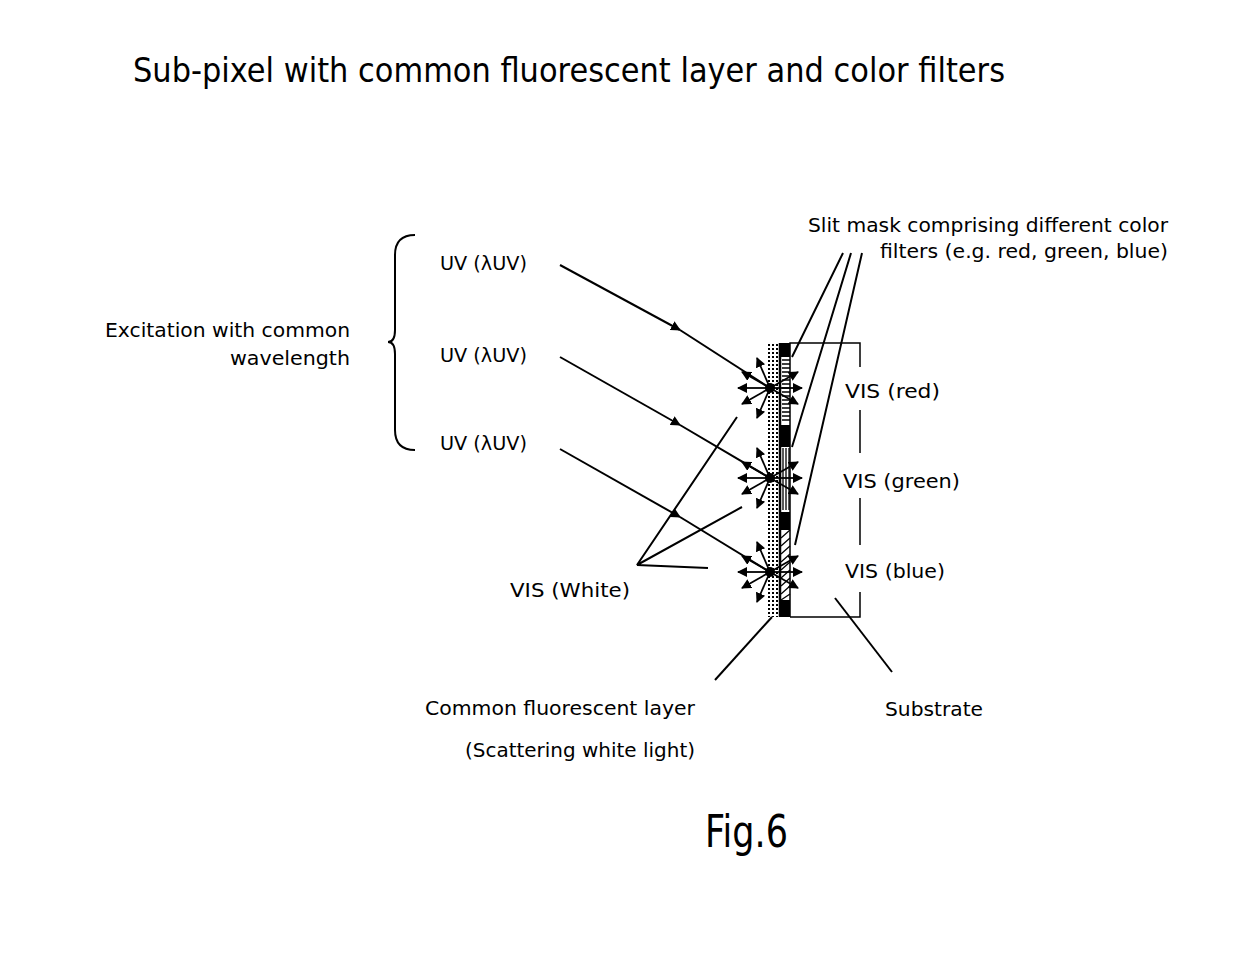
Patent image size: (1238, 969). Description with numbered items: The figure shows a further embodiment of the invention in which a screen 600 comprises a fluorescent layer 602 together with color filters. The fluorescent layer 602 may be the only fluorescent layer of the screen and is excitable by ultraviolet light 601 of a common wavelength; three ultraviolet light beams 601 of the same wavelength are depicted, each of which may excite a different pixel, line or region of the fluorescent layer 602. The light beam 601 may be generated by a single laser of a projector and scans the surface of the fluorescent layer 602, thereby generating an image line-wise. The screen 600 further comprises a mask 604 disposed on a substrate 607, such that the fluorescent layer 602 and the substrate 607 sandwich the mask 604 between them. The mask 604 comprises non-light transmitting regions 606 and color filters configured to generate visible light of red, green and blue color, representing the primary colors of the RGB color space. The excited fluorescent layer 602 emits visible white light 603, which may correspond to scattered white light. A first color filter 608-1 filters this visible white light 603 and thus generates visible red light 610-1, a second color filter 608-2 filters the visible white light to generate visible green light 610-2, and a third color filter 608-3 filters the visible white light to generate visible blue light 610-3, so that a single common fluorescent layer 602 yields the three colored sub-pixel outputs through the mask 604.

The screen 600 is at (766, 704).
The ultraviolet light 601 is at (614, 294).
The fluorescent layer 602 is at (773, 619).
The visible white light 603 is at (740, 384).
The mask 604 is at (763, 292).
The non-light transmitting regions 606 is at (800, 352).
The substrate 607 is at (829, 619).
The first color filter 608-1 is at (800, 370).
The second color filter 608-2 is at (800, 460).
The third color filter 608-3 is at (800, 545).
The visible red light 610-1 is at (805, 386).
The visible green light 610-2 is at (805, 478).
The visible blue light 610-3 is at (805, 585).